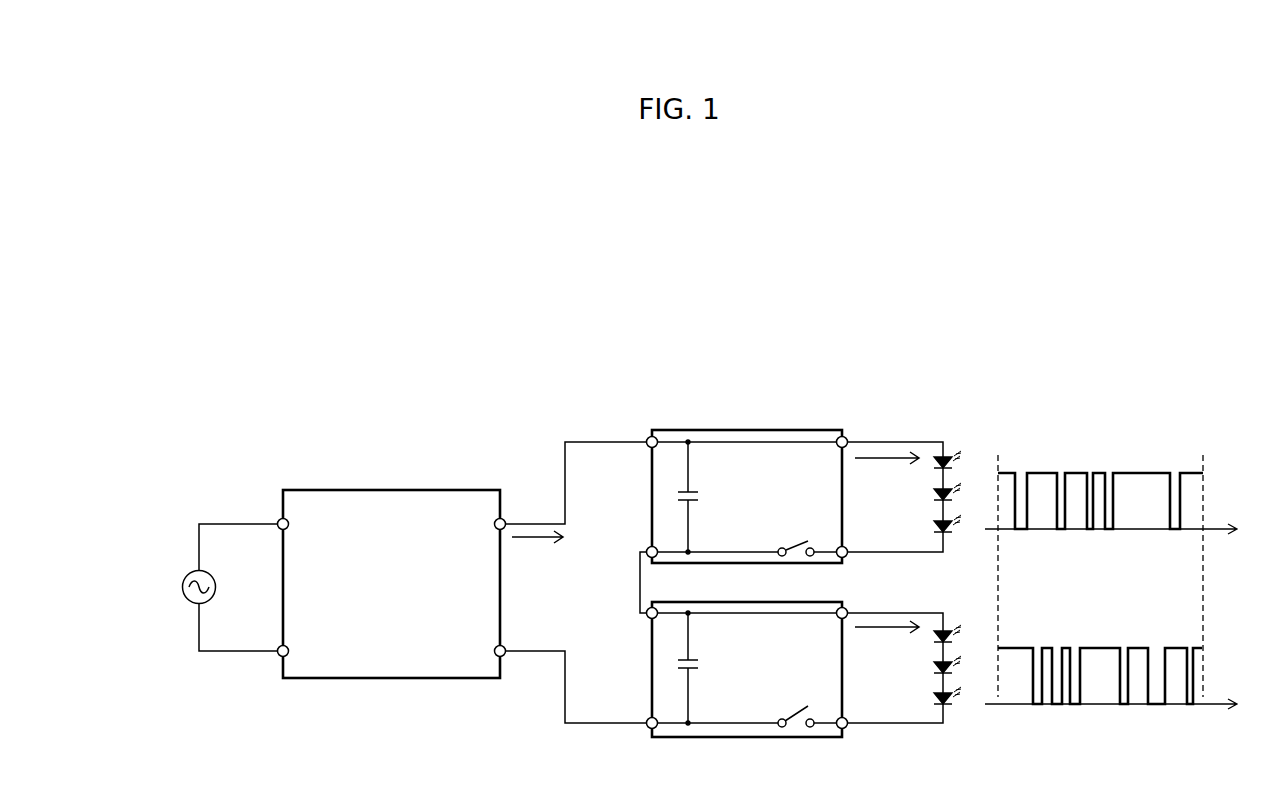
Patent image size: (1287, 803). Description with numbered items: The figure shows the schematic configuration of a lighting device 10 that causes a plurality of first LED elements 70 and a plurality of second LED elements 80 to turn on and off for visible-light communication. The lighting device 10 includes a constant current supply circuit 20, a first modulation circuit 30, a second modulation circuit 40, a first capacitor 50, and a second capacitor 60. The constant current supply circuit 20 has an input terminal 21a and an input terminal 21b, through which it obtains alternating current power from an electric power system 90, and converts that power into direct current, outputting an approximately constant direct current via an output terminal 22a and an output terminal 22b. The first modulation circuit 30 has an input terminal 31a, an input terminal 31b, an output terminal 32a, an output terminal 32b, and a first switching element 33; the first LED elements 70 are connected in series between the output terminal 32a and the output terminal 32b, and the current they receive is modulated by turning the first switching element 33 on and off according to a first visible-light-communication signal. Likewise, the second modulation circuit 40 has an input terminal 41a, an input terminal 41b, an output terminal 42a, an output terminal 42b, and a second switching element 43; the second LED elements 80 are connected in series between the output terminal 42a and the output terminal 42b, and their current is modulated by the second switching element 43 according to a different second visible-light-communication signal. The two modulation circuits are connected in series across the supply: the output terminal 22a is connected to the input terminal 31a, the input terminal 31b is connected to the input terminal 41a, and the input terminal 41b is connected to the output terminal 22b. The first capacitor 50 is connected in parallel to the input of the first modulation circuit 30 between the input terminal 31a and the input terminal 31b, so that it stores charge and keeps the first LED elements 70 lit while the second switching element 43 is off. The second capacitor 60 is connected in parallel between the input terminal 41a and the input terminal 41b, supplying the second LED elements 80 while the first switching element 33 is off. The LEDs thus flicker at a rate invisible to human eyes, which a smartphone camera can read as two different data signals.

The lighting device 10 is at (900, 338).
The constant current supply circuit 20 is at (450, 490).
The input terminal 21a is at (278, 519).
The input terminal 21b is at (278, 646).
The output terminal 22a is at (506, 518).
The output terminal 22b is at (506, 646).
The first modulation circuit 30 is at (797, 429).
The input terminal 31a is at (645, 437).
The input terminal 31b is at (645, 549).
The output terminal 32a is at (851, 438).
The output terminal 32b is at (851, 548).
The first switching element 33 is at (790, 562).
The second modulation circuit 40 is at (798, 603).
The input terminal 41a is at (645, 619).
The input terminal 41b is at (645, 720).
The output terminal 42a is at (851, 610).
The output terminal 42b is at (851, 719).
The second switching element 43 is at (794, 738).
The first capacitor 50 is at (676, 494).
The second capacitor 60 is at (676, 661).
The first LED elements 70 is at (950, 456).
The second LED elements 80 is at (950, 636).
The electric power system 90 is at (183, 582).